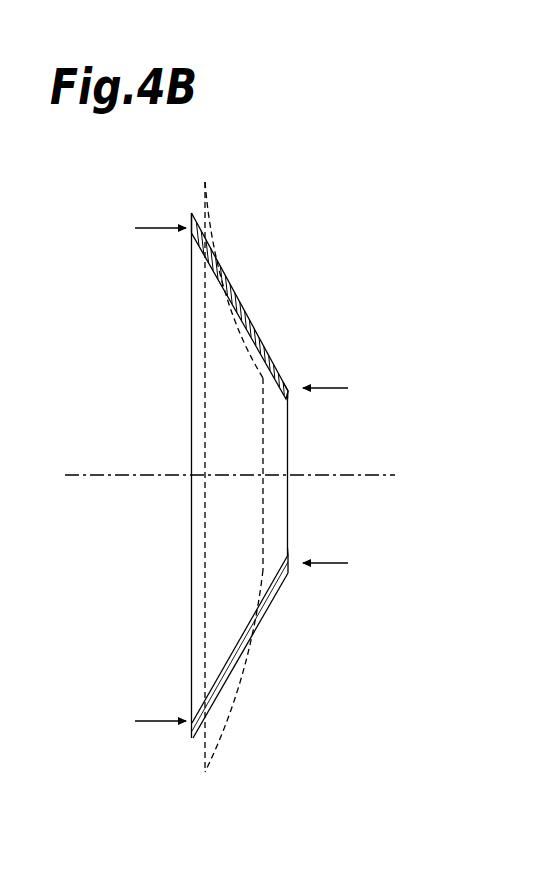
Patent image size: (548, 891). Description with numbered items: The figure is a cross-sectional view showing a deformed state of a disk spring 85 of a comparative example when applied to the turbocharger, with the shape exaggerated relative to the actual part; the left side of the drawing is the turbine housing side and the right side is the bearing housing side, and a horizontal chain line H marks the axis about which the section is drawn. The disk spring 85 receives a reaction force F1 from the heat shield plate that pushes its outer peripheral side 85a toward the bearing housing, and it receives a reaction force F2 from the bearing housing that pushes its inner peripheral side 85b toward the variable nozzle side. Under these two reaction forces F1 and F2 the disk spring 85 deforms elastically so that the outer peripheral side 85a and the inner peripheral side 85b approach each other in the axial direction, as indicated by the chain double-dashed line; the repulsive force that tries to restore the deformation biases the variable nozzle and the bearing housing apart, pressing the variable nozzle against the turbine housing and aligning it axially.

The disk spring 85 is at (269, 479).
The outer peripheral side 85a is at (191, 216).
The inner peripheral side 85b is at (290, 388).
The reaction force F1 is at (152, 228).
The reaction force F2 is at (348, 388).
The axis H is at (373, 478).